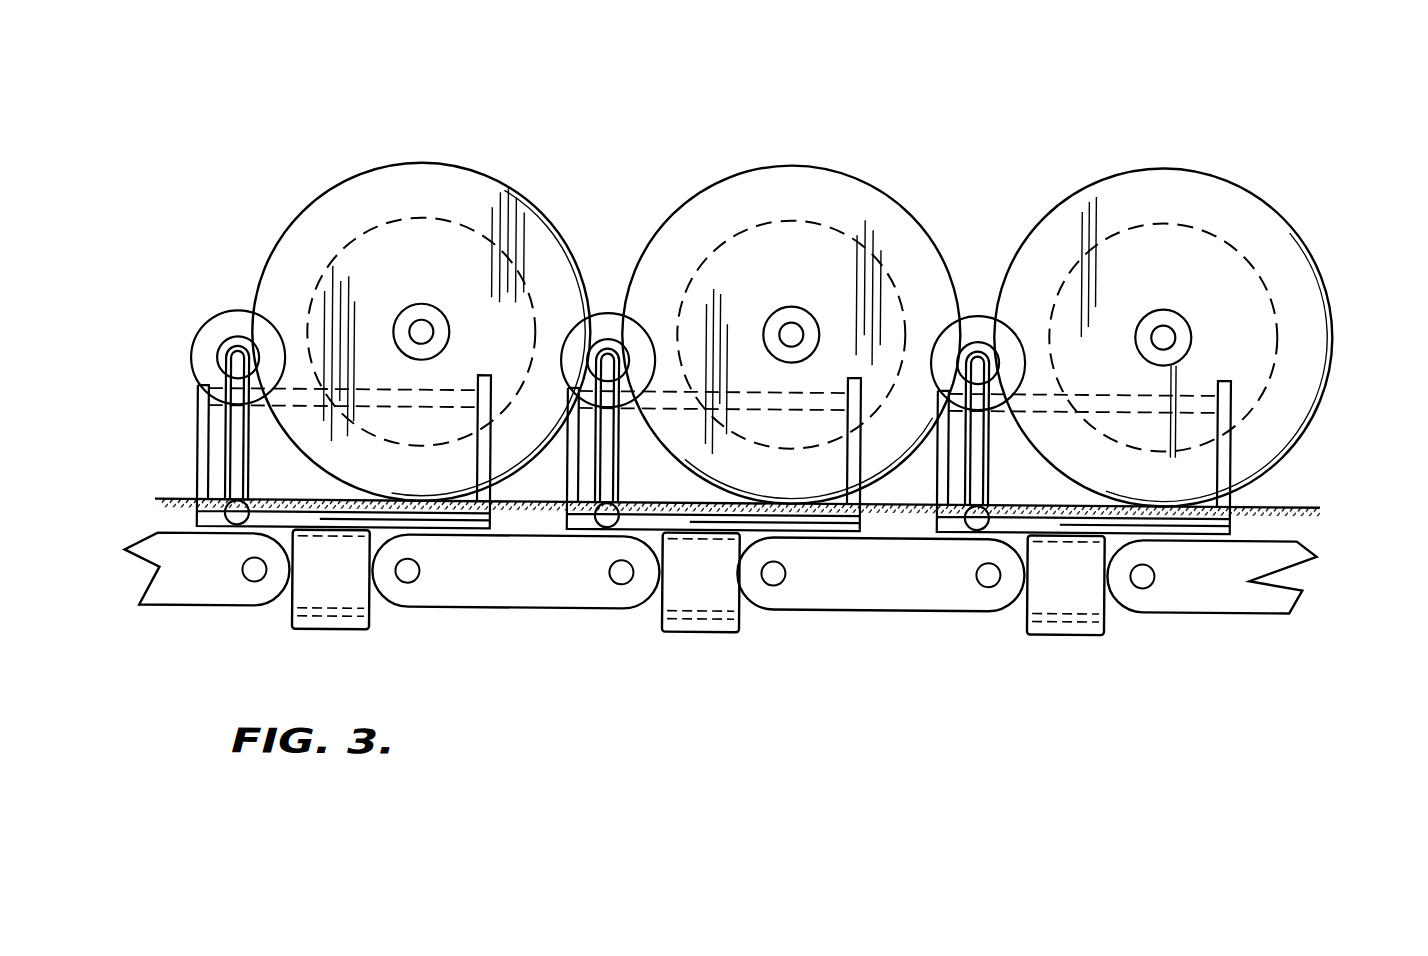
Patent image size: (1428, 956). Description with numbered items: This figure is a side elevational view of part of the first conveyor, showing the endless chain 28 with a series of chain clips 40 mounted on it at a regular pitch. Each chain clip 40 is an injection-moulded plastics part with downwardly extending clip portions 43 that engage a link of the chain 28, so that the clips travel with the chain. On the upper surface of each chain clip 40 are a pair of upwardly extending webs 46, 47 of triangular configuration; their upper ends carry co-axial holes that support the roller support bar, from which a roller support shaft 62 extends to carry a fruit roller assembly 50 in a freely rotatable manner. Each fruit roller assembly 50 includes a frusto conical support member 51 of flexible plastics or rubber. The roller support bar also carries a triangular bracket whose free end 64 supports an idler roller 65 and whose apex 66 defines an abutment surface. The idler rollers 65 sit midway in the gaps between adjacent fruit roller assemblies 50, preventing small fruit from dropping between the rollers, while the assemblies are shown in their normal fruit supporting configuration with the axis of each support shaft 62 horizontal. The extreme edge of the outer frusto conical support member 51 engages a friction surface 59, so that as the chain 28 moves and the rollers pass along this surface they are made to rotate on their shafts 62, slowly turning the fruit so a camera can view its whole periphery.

The endless chain 28 is at (820, 578).
The chain clip 40 is at (666, 453).
The clip portion 43 is at (697, 612).
The upwardly extending web 46 is at (198, 408).
The upwardly extending web 47 is at (1287, 431).
The fruit roller assembly 50 is at (799, 267).
The frusto conical support member 51 is at (305, 222).
The friction surface 59 is at (1293, 499).
The roller support shaft 62 is at (791, 329).
The free end 64 is at (230, 362).
The idler roller 65 is at (222, 325).
The apex 66 is at (233, 452).